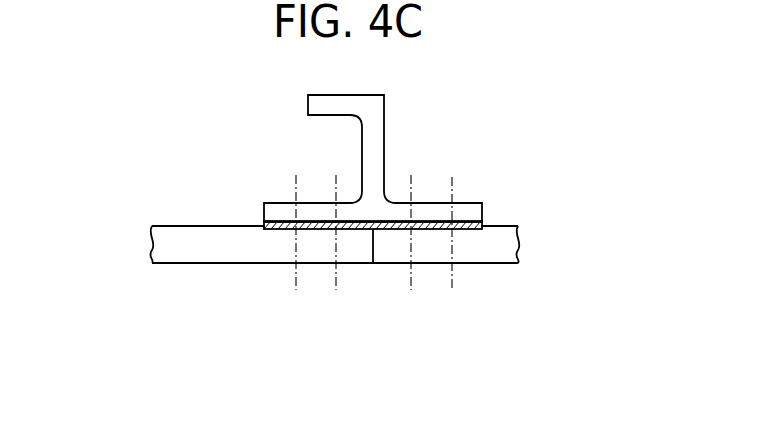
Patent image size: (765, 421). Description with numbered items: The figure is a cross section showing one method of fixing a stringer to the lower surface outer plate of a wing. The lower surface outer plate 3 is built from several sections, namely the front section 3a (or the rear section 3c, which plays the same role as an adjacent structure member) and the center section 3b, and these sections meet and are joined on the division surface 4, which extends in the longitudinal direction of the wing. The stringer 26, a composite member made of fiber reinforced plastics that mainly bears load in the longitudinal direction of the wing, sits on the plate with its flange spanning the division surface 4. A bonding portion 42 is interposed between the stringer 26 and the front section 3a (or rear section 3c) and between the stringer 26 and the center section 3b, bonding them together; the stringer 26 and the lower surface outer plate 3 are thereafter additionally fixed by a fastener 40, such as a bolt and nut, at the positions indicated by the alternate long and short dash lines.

The lower surface outer plate 3 is at (159, 300).
The front section 3a is at (218, 255).
The rear section 3c is at (262, 244).
The center section 3b is at (498, 260).
The division surface 4 is at (373, 263).
The stringer 26 is at (373, 123).
The fastener 40 is at (452, 177).
The bonding portion 42 is at (265, 223).